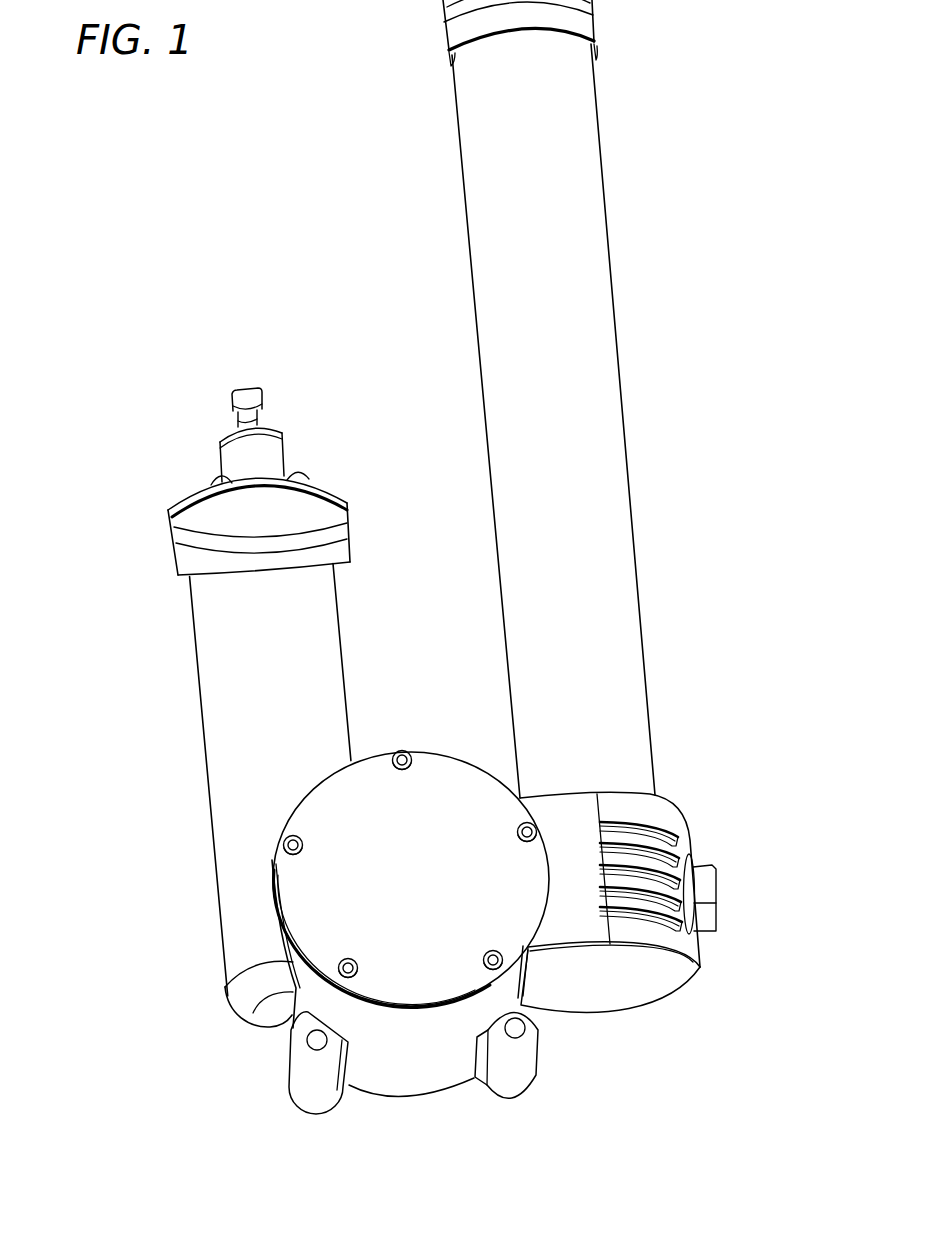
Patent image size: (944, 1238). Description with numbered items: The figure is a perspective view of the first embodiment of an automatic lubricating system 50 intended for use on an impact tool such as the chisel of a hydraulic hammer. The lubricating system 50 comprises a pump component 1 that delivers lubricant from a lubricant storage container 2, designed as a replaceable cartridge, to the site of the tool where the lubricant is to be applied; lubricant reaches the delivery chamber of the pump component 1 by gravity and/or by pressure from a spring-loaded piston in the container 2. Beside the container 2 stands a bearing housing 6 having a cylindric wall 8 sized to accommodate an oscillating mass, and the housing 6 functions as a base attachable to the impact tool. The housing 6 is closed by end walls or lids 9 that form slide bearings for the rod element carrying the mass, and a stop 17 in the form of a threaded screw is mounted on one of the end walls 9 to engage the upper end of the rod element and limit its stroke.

The pump component 1 is at (717, 880).
The lubricant storage container 2 is at (587, 288).
The bearing housing 6 is at (233, 911).
The cylindric wall 8 is at (222, 650).
The end walls 9 is at (185, 495).
The stop 17 is at (230, 400).
The lubricating system 50 is at (149, 767).